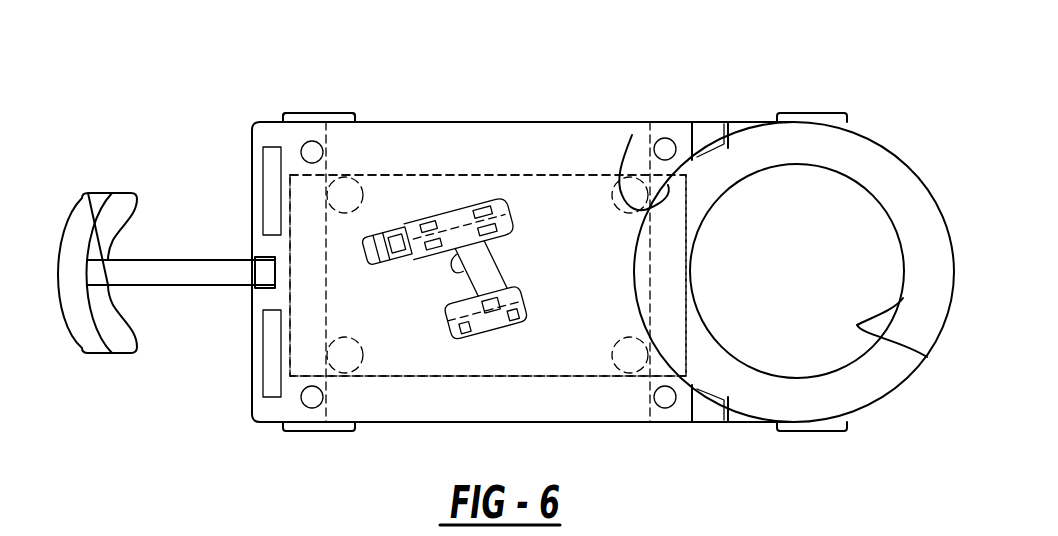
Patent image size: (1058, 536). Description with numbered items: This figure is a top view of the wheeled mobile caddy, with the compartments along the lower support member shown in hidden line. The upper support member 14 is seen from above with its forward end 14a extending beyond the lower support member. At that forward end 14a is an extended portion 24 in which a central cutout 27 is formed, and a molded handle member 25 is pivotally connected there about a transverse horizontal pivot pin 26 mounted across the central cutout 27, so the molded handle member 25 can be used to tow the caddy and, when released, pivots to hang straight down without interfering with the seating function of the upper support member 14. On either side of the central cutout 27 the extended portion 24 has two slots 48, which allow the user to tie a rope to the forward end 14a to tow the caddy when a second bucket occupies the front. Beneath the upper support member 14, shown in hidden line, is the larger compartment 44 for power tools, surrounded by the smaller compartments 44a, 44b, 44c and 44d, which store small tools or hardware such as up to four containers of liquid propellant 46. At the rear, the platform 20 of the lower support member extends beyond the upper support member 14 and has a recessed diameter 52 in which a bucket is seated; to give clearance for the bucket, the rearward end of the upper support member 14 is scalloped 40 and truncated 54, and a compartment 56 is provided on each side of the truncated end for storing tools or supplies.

The upper support member 14 is at (528, 122).
The forward end of the upper support member 14a is at (252, 190).
The platform 20 is at (912, 167).
The extended portion 24 is at (268, 122).
The molded handle member 25 is at (88, 330).
The transverse horizontal pivot pin 26 is at (257, 292).
The central cutout 27 is at (253, 267).
The scalloped rearward end 40 is at (632, 135).
The larger compartment 44 is at (538, 280).
The smaller compartment 44a is at (470, 415).
The smaller compartment 44b is at (658, 281).
The smaller compartment 44c is at (297, 293).
The smaller compartment 44d is at (480, 163).
The containers of liquid propellant 46 is at (363, 192).
The slots 48 is at (270, 165).
The recessed diameter 52 is at (927, 357).
The truncated rearward end 54 is at (748, 133).
The compartment 56 is at (712, 137).